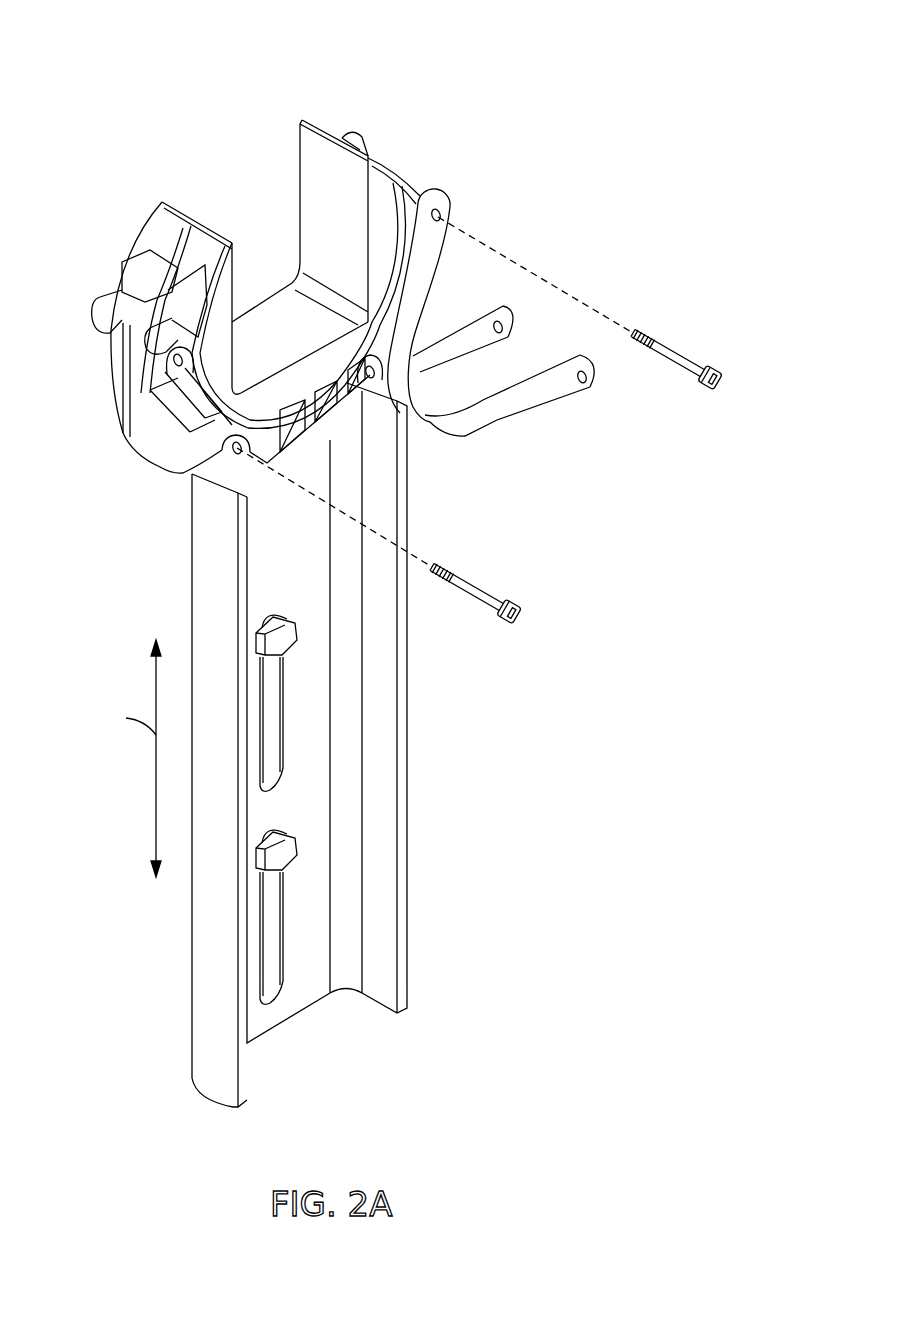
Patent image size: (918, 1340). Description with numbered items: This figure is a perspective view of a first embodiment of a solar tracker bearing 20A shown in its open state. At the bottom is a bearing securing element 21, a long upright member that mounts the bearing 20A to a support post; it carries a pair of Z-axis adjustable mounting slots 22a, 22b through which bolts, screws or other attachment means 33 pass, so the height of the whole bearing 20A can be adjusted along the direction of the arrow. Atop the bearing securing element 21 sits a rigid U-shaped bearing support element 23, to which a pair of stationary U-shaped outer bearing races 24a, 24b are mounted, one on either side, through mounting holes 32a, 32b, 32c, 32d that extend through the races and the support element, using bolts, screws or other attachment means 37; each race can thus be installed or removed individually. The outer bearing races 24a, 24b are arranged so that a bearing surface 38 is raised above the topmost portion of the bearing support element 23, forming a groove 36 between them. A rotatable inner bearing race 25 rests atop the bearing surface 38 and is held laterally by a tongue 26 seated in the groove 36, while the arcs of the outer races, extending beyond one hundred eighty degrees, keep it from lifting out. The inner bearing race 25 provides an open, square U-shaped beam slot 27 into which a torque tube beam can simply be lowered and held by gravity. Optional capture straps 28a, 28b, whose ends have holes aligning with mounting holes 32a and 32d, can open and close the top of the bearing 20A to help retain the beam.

The solar tracker bearing 20A is at (505, 60).
The bearing securing element 21 is at (182, 590).
The Z-axis adjustable mounting slot 22a is at (267, 698).
The Z-axis adjustable mounting slot 22b is at (267, 911).
The U-shaped bearing support element 23 is at (127, 435).
The outer bearing race 24a is at (113, 365).
The outer bearing race 24b is at (140, 393).
The inner bearing race 25 is at (317, 128).
The tongue 26 is at (190, 225).
The beam slot 27 is at (282, 310).
The capture strap 28a is at (490, 303).
The capture strap 28b is at (577, 356).
The mounting hole 32a is at (178, 367).
The mounting hole 32b is at (237, 455).
The mounting hole 32c is at (380, 372).
The mounting hole 32d is at (430, 200).
The attachment means 33 is at (285, 628).
The groove 36 is at (185, 320).
The attachment means 37 is at (685, 352).
The bearing surface 38 is at (315, 393).